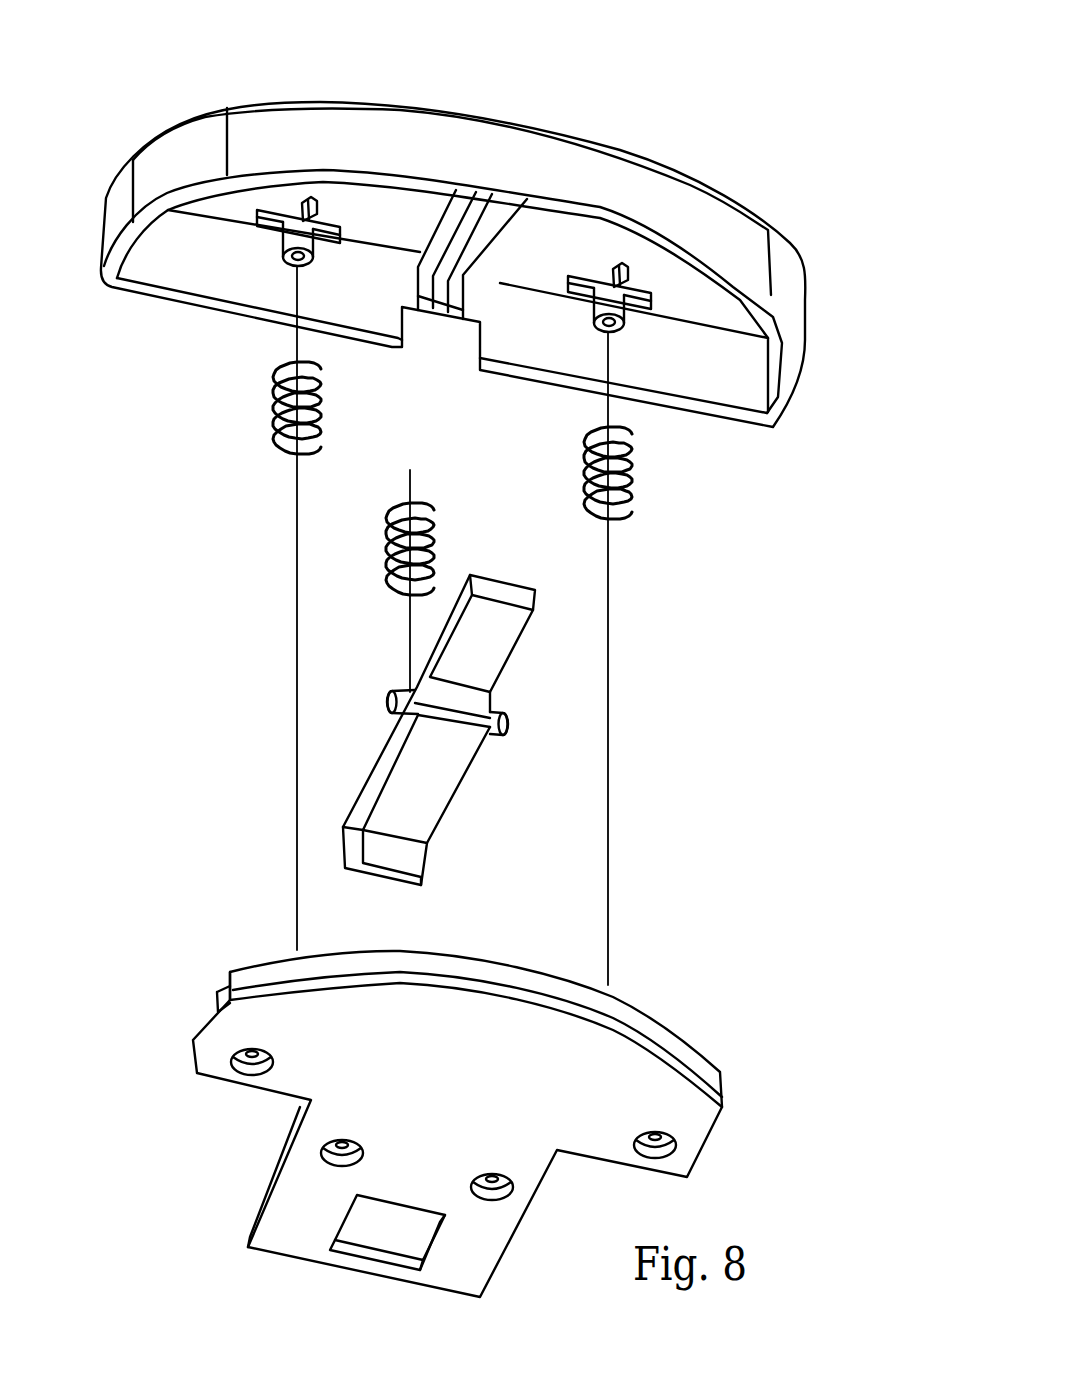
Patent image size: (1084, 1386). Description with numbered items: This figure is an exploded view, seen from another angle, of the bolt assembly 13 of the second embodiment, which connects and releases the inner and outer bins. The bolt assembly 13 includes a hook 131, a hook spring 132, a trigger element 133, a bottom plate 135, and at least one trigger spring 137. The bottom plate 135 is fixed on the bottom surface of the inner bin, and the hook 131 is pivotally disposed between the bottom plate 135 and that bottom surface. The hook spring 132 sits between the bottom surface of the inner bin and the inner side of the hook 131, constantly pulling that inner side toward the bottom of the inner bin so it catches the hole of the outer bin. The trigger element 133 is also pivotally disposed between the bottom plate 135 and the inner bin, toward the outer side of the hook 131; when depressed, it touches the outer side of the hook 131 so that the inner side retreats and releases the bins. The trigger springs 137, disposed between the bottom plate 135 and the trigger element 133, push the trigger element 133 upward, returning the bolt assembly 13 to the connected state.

The bolt assembly 13 is at (684, 138).
The hook 131 is at (440, 767).
The hook spring 132 is at (430, 538).
The trigger element 133 is at (750, 240).
The bottom plate 135 is at (530, 1058).
The trigger spring 137 is at (272, 392).